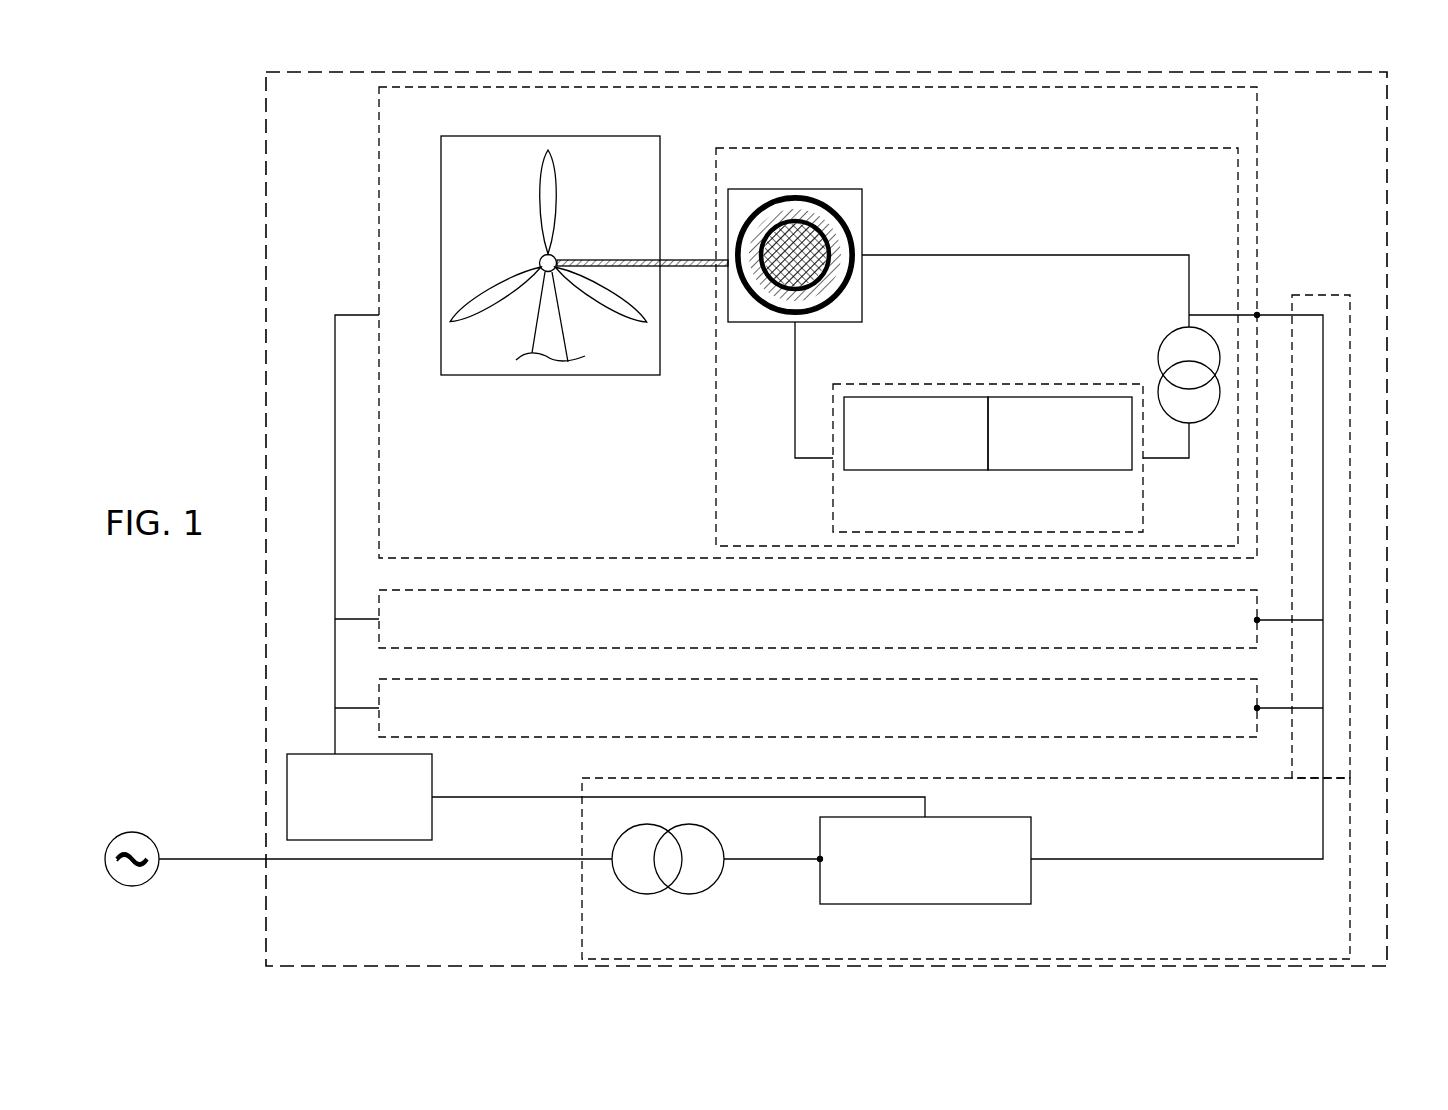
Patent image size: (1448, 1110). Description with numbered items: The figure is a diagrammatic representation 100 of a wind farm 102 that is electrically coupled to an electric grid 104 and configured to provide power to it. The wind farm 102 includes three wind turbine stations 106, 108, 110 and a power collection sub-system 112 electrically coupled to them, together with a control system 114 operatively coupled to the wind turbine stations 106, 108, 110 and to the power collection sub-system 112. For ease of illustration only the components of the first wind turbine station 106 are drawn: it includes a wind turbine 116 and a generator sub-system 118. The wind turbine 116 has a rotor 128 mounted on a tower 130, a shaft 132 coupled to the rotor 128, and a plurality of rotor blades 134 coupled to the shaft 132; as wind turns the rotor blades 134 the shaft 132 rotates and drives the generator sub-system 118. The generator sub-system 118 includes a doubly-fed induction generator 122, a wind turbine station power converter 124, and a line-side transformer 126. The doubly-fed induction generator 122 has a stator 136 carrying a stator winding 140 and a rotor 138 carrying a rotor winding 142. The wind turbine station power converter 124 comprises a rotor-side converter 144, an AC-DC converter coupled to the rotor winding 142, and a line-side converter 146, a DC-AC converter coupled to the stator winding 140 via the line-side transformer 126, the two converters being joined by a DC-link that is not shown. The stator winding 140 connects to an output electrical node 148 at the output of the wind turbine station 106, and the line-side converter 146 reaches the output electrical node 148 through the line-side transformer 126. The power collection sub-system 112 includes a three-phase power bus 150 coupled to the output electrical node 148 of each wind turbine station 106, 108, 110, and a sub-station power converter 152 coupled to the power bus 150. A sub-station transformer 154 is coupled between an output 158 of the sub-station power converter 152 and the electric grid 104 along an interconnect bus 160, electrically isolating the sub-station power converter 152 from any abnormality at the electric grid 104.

The diagrammatic representation 100 is at (178, 94).
The wind farm 102 is at (266, 287).
The electric grid 104 is at (132, 832).
The wind turbine station 106 is at (1257, 127).
The wind turbine station 108 is at (1005, 590).
The wind turbine station 110 is at (1005, 679).
The power collection sub-system 112 is at (1320, 295).
The control system 114 is at (432, 814).
The wind turbine 116 is at (540, 136).
The generator sub-system 118 is at (1062, 148).
The doubly-fed induction generator 122 is at (826, 258).
The wind turbine station power converter 124 is at (1026, 436).
The line-side transformer 126 is at (1164, 336).
The rotor 128 is at (548, 239).
The tower 130 is at (560, 310).
The shaft 132 is at (680, 260).
The rotor blades 134 is at (540, 240).
The stator 136 is at (772, 210).
The rotor 138 is at (778, 308).
The stator winding 140 is at (828, 226).
The rotor winding 142 is at (840, 275).
The rotor-side converter 144 is at (915, 397).
The line-side converter 146 is at (1060, 397).
The output electrical node 148 is at (1257, 315).
The power bus 150 is at (1323, 395).
The sub-station power converter 152 is at (1031, 878).
The sub-station transformer 154 is at (618, 835).
The output 158 is at (820, 858).
The interconnect bus 160 is at (440, 860).